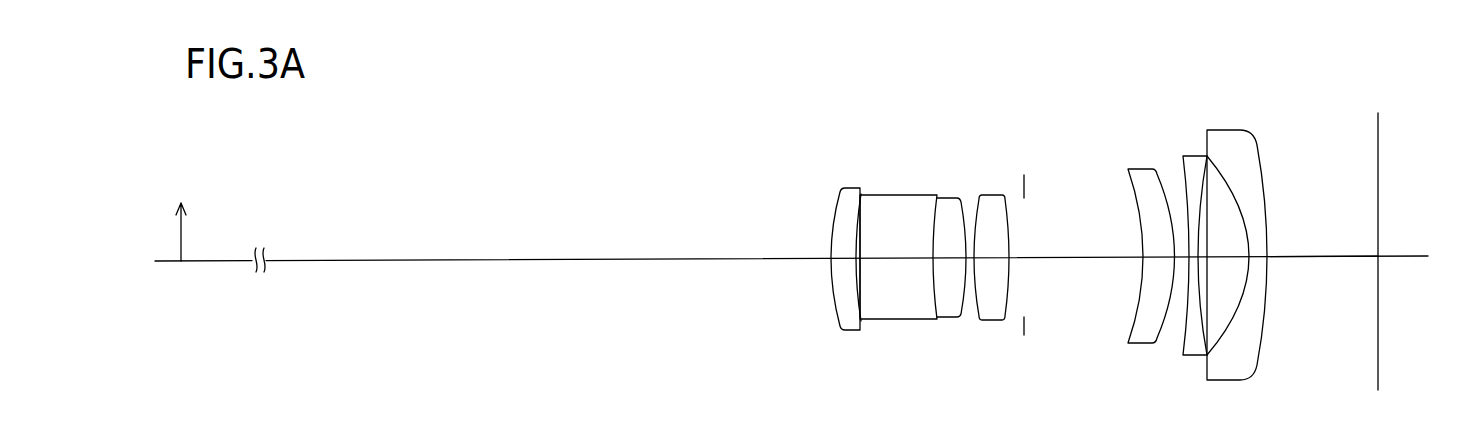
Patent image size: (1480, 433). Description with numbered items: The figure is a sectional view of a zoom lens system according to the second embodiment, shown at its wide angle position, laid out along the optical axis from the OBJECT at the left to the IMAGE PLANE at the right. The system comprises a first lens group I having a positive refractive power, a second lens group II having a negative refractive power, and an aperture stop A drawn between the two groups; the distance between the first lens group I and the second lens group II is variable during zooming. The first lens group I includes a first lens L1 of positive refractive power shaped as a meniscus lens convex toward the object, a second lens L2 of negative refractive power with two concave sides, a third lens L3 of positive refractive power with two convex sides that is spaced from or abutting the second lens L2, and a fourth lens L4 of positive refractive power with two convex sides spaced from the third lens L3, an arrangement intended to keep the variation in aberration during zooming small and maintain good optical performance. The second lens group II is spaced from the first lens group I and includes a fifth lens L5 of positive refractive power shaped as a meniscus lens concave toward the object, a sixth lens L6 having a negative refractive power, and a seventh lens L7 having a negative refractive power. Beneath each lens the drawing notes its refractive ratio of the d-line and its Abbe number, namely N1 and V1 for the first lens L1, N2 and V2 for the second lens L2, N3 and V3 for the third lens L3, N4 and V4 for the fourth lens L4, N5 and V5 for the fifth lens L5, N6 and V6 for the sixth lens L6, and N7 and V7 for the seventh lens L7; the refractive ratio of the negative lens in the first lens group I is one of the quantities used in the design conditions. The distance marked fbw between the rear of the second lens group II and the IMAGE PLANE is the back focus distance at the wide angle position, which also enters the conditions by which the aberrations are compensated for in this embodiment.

The first lens group I is at (1005, 125).
The second lens group II is at (1258, 83).
The first lens L1 is at (848, 259).
The second lens L2 is at (898, 259).
The third lens L3 is at (951, 259).
The fourth lens L4 is at (991, 259).
The fifth lens L5 is at (1150, 258).
The sixth lens L6 is at (1191, 259).
The seventh lens L7 is at (1237, 256).
The refractive ratio of first lens N1 is at (848, 259).
The refractive ratio of second lens N2 is at (898, 259).
The refractive ratio of third lens N3 is at (951, 259).
The refractive ratio of fourth lens N4 is at (991, 259).
The refractive ratio of fifth lens N5 is at (1150, 258).
The refractive ratio of sixth lens N6 is at (1191, 259).
The refractive ratio of seventh lens N7 is at (1237, 256).
The Abbe number of first lens V1 is at (856, 187).
The Abbe number of second lens V2 is at (897, 195).
The Abbe number of third lens V3 is at (953, 205).
The Abbe number of fourth lens V4 is at (994, 196).
The Abbe number of fifth lens V5 is at (1143, 178).
The Abbe number of sixth lens V6 is at (1197, 163).
The Abbe number of seventh lens V7 is at (1231, 137).
The aperture stop A is at (1024, 336).
The back focus distance at wide angle position fbw is at (1320, 254).
The object OBJECT is at (180, 216).
The image plane IMAGE PLANE is at (1419, 254).